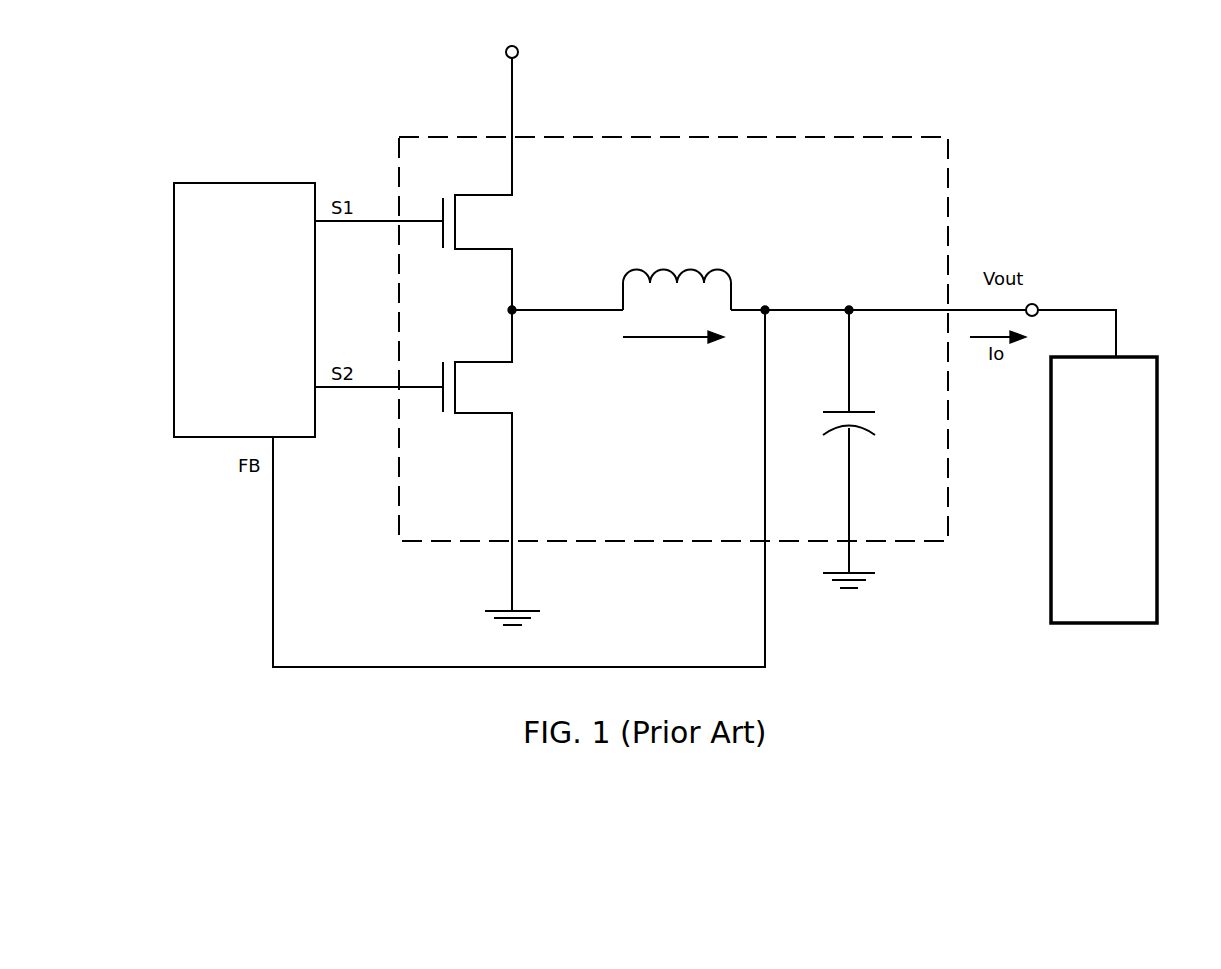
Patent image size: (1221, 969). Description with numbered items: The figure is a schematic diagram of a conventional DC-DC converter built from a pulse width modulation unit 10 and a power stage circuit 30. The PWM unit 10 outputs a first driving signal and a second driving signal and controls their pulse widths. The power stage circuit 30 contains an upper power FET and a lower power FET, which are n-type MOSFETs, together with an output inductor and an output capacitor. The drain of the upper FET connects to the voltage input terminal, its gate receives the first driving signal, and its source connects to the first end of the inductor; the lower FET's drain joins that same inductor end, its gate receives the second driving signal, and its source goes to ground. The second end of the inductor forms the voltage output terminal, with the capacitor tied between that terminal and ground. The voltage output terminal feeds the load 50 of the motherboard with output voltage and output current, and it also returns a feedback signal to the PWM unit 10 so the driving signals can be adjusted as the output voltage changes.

The pulse width modulation (PWM) unit 10 is at (211, 186).
The power stage circuit 30 is at (640, 137).
The load 50 is at (1137, 357).